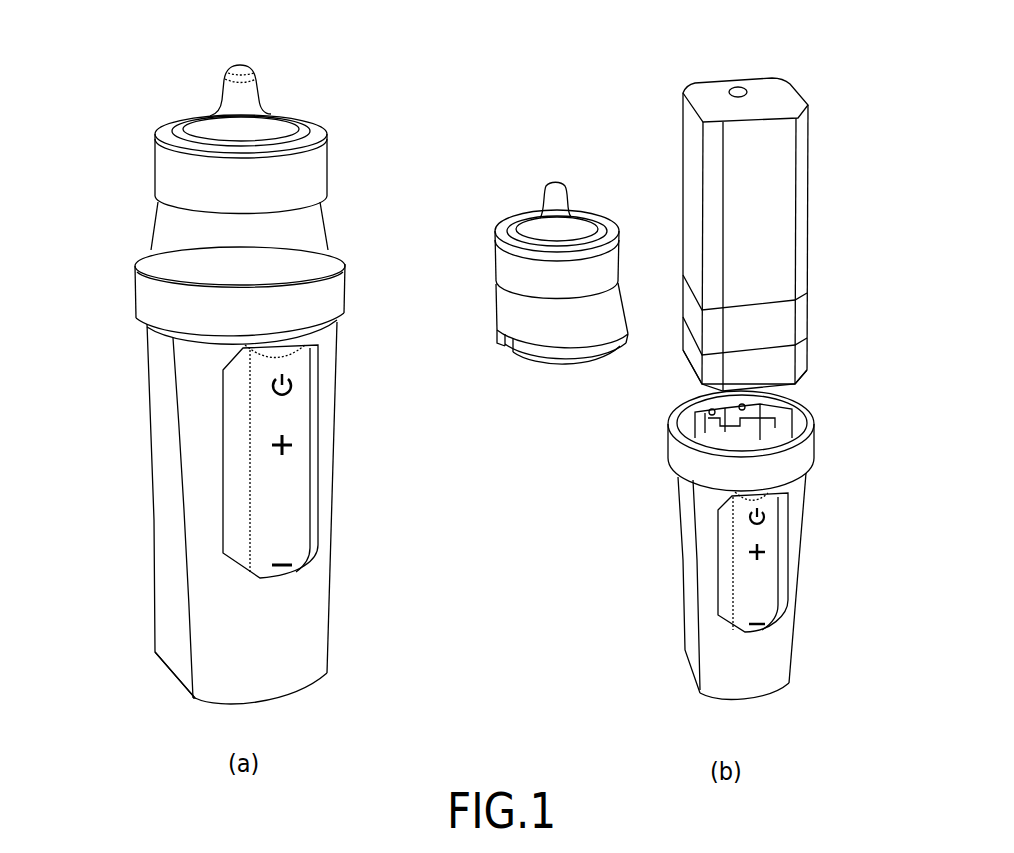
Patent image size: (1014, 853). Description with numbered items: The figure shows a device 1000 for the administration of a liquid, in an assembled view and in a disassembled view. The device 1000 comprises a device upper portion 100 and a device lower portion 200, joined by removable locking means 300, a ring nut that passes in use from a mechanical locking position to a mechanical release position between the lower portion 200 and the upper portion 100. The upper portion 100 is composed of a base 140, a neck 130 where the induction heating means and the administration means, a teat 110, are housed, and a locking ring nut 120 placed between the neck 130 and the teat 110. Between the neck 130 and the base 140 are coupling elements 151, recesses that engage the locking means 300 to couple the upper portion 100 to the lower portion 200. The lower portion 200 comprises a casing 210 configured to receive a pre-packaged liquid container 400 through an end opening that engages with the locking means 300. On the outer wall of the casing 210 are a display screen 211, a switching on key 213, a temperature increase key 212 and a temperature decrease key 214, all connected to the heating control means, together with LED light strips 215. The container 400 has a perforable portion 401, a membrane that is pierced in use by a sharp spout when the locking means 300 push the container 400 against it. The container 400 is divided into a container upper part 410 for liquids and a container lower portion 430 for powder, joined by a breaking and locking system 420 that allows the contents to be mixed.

The liquid administration device 1000 is at (390, 125).
The device upper portion 100 is at (103, 53).
The teat 110 is at (257, 86).
The locking ring nut 120 is at (268, 183).
The neck 130 is at (258, 242).
The base 140 is at (530, 349).
The coupling elements 151 is at (497, 340).
The device lower portion 200 is at (112, 318).
The casing 210 is at (275, 642).
The display screen 211 is at (283, 495).
The temperature increase key 212 is at (293, 446).
The switching on key 213 is at (292, 385).
The temperature decrease key 214 is at (293, 565).
The light strips 215 is at (190, 658).
The removable locking means 300 is at (158, 298).
The pre-packaged liquid container 400 is at (868, 133).
The perforable portion 401 is at (738, 86).
The container upper part 410 is at (758, 237).
The breaking and locking system 420 is at (767, 327).
The container lower portion 430 is at (768, 365).